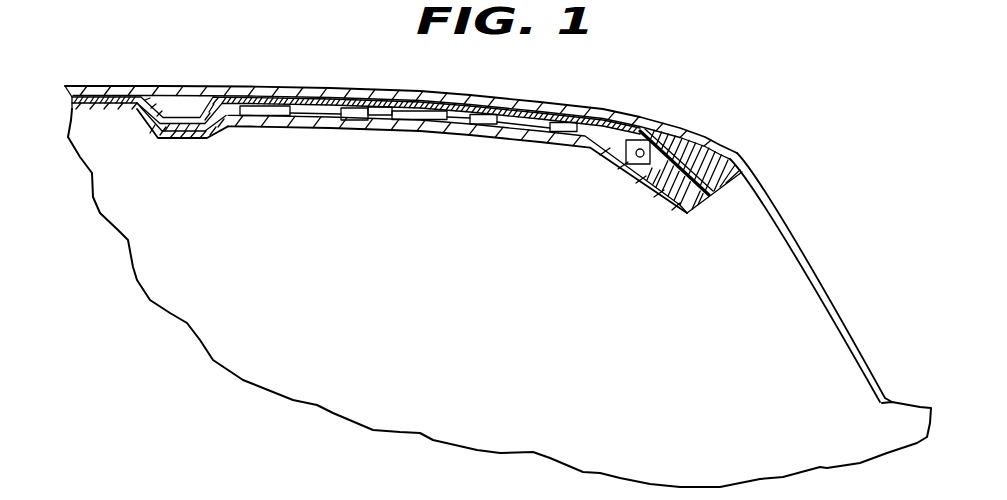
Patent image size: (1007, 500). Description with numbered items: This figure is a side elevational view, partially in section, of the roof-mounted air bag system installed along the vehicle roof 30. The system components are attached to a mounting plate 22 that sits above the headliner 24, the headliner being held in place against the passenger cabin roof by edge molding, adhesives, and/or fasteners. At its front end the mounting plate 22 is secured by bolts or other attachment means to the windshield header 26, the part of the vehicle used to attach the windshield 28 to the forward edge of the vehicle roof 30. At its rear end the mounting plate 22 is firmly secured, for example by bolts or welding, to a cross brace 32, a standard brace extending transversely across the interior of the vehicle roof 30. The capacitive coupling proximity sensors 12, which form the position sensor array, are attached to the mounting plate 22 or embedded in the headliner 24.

The capacitive coupling proximity sensor 12 is at (247, 117).
The mounting plate 22 is at (373, 126).
The headliner 24 is at (260, 124).
The windshield header 26 is at (697, 141).
The windshield 28 is at (802, 238).
The vehicle roof 30 is at (258, 90).
The cross brace 32 is at (183, 103).